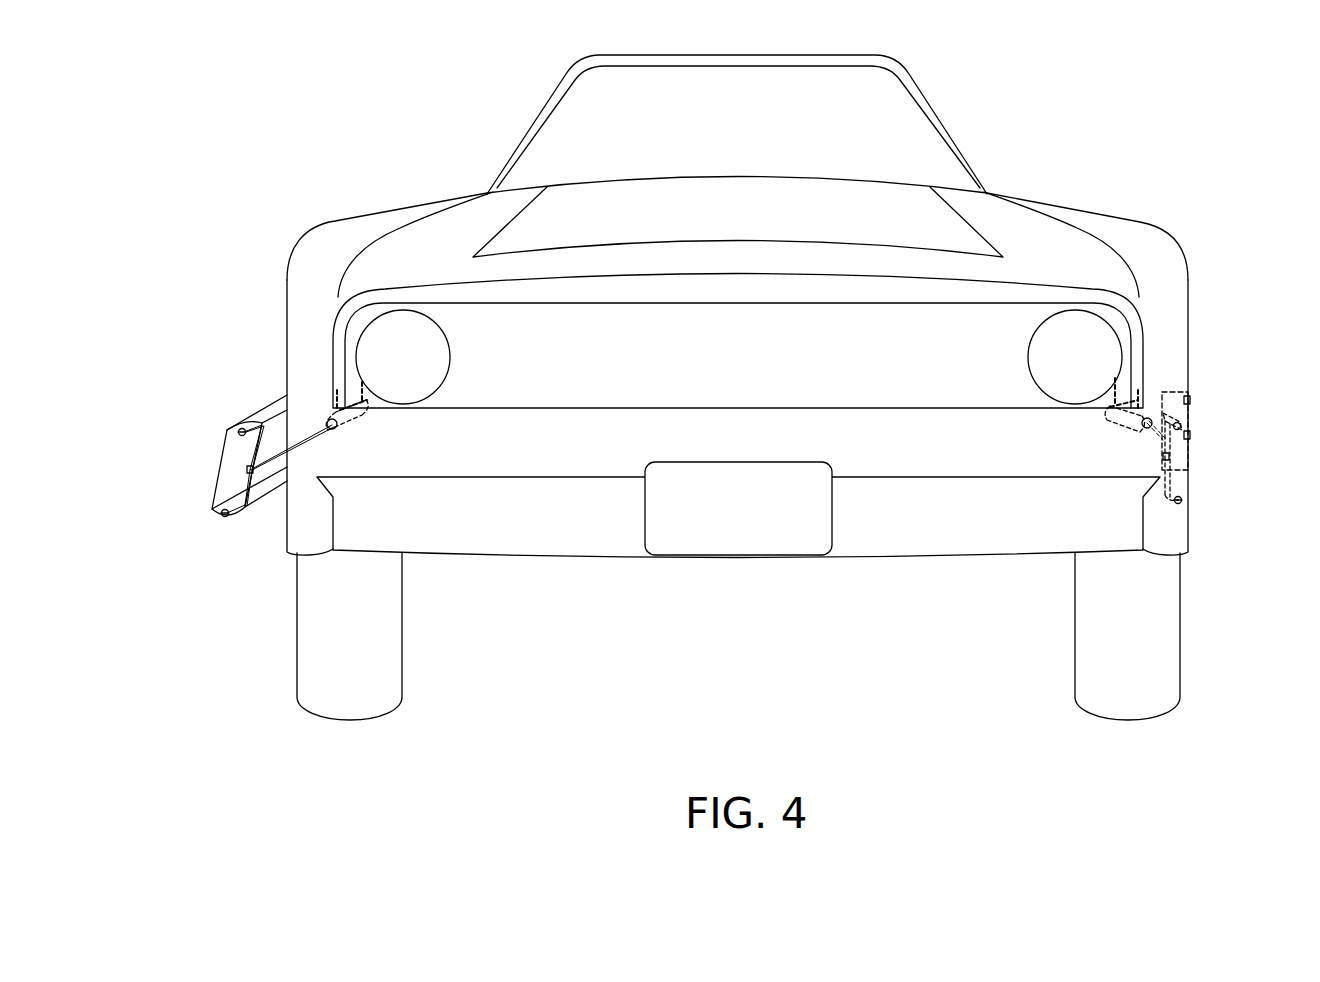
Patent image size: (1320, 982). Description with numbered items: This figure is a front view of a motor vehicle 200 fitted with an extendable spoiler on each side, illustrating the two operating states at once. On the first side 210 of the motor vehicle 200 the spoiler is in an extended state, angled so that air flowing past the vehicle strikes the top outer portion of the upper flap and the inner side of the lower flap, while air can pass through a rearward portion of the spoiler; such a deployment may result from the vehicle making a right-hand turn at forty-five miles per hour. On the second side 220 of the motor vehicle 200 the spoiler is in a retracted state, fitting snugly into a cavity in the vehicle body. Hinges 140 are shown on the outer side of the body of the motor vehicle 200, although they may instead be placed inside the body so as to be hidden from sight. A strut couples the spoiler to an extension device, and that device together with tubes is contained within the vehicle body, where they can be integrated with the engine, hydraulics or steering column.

The hinges 140 is at (1190, 435).
The motor vehicle 200 is at (470, 227).
The first side 210 is at (390, 208).
The second side 220 is at (1110, 213).